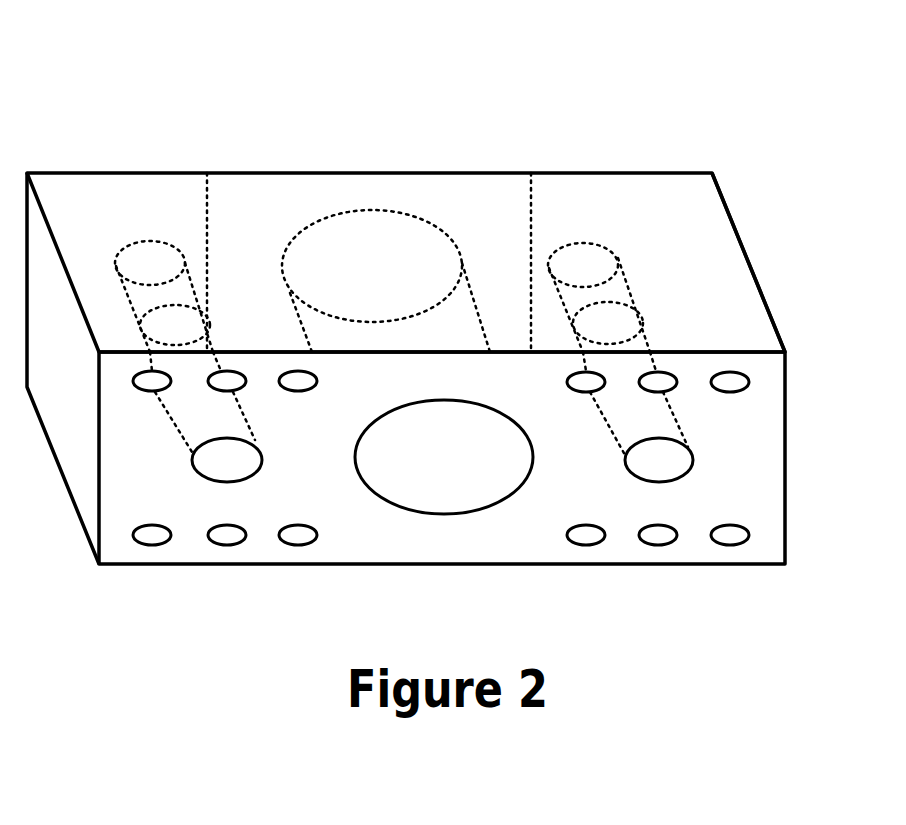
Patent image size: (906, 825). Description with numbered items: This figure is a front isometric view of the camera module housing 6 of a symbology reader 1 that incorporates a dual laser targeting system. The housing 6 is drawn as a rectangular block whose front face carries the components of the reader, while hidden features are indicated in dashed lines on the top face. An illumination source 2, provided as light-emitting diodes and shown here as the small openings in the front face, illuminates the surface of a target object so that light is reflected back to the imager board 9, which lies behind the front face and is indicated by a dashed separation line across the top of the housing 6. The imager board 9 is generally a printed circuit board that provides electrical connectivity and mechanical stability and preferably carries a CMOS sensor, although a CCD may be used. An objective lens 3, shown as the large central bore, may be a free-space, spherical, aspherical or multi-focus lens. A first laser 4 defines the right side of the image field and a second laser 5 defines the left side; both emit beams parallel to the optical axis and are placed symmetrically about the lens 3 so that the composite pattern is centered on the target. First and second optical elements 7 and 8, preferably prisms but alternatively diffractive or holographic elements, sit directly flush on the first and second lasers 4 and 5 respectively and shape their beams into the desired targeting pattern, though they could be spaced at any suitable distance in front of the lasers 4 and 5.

The symbology reader 1 is at (406, 295).
The illumination source 2 is at (766, 347).
The objective lens 3 is at (406, 281).
The first laser 4 is at (146, 302).
The second laser 5 is at (627, 307).
The camera module housing 6 is at (769, 262).
The first optical element 7 is at (192, 452).
The second optical element 8 is at (677, 449).
The imager board 9 is at (401, 227).